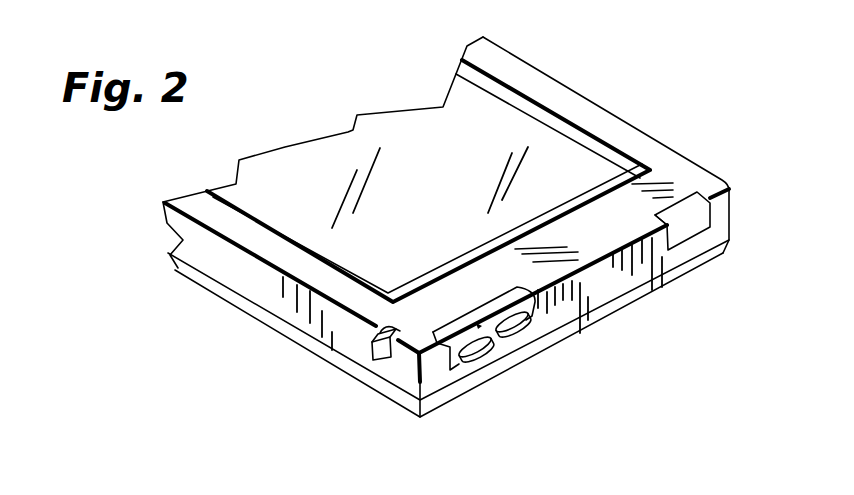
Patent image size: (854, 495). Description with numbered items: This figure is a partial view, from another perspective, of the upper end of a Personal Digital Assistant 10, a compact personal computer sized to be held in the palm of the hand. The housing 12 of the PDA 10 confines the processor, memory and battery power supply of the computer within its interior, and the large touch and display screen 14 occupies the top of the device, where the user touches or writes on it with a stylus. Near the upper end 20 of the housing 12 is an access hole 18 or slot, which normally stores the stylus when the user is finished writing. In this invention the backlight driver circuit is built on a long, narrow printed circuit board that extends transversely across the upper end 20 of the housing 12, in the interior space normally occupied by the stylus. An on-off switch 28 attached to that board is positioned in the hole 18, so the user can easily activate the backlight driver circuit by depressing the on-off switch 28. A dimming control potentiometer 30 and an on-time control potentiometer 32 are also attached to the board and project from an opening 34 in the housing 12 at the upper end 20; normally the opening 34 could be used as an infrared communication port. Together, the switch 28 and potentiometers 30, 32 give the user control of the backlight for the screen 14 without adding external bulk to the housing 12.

The Personal Digital Assistant 10 is at (683, 104).
The housing 12 is at (196, 238).
The touch and display screen 14 is at (478, 132).
The access hole 18 is at (393, 340).
The upper end 20 is at (610, 315).
The on-off switch 28 is at (398, 362).
The dimming control potentiometer 30 is at (481, 356).
The on-time control potentiometer 32 is at (520, 334).
The opening 34 is at (505, 303).